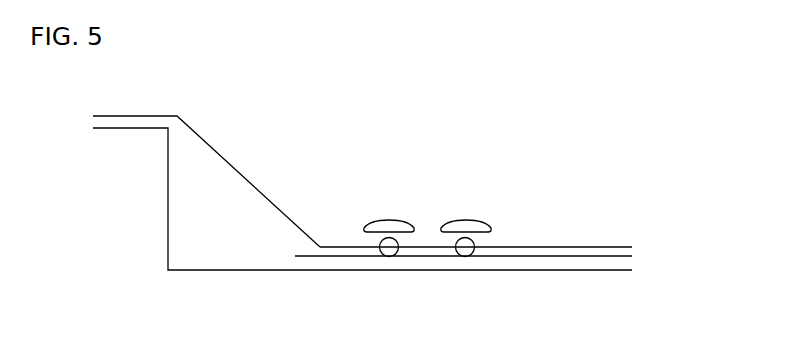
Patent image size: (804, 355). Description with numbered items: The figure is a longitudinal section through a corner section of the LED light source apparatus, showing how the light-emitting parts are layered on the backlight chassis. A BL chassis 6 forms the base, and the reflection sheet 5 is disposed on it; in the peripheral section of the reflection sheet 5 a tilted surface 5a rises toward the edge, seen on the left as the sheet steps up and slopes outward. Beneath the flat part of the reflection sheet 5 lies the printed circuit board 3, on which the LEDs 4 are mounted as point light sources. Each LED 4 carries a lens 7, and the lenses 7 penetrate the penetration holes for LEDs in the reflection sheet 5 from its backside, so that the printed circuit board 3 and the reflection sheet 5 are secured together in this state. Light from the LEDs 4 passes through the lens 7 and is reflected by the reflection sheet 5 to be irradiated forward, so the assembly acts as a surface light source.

The printed circuit board 3 is at (613, 257).
The LED 4 is at (400, 240).
The reflection sheet 5 is at (600, 247).
The tilted surface 5a is at (223, 160).
The BL chassis 6 is at (182, 270).
The lens 7 is at (390, 220).